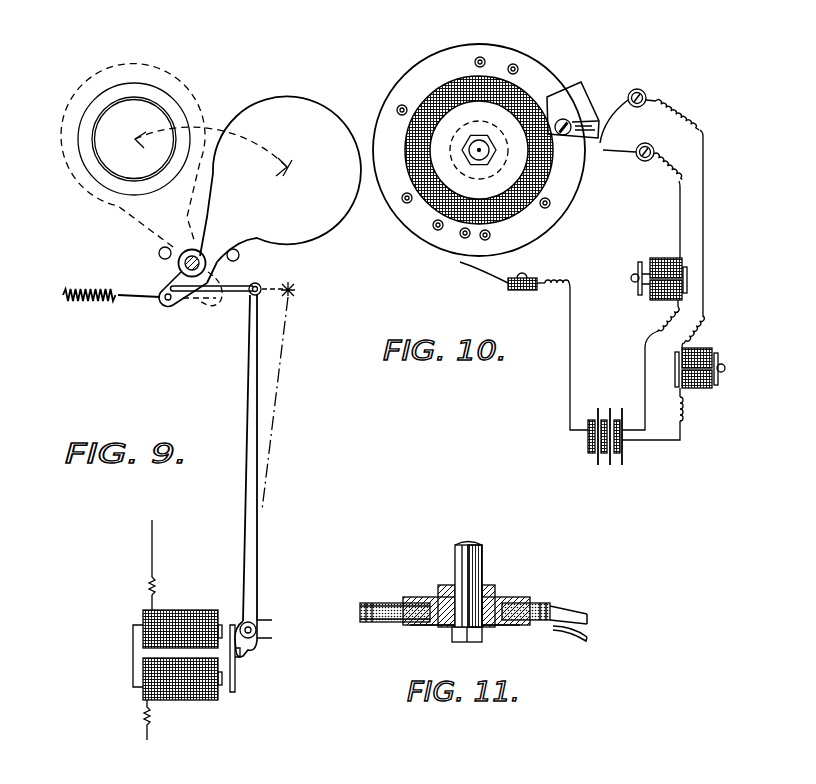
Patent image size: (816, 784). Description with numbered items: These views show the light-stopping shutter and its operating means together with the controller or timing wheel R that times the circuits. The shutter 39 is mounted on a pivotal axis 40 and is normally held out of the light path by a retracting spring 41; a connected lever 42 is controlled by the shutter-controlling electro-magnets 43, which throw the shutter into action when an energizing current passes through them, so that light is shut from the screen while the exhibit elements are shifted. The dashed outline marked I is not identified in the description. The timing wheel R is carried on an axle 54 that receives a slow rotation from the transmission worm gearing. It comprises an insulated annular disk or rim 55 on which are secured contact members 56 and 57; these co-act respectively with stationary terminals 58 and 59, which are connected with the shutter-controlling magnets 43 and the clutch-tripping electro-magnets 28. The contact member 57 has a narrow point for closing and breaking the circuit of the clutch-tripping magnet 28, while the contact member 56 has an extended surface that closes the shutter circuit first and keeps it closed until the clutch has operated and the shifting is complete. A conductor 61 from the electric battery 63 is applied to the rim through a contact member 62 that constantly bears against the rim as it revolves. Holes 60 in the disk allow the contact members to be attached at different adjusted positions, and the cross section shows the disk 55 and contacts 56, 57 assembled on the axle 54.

In FIG. 9, the cam in initial position (dashed) I is at (147, 95).
In FIG. 9, the light-stopping shutter 39 is at (285, 107).
In FIG. 9, the pivotal axis 40 is at (178, 265).
In FIG. 9, the retracting spring 41 is at (98, 299).
In FIG. 9, the connected lever 42 is at (248, 478).
In FIG. 9, the shutter-controlling electro-magnets 43 is at (187, 658).
In FIG. 10, the shutter-controlling electro-magnets 43 is at (697, 377).
In FIG. 10, the timing wheel R is at (479, 133).
In FIG. 11, the timing wheel R is at (433, 628).
In FIG. 10, the insulated annular disk 55 is at (428, 73).
In FIG. 11, the insulated annular disk 55 is at (370, 605).
In FIG. 10, the contact member 56 is at (568, 98).
In FIG. 11, the contact member 56 is at (584, 621).
In FIG. 10, the contact member 57 is at (584, 120).
In FIG. 11, the contact member 57 is at (588, 639).
In FIG. 10, the stationary terminal 58 is at (620, 113).
In FIG. 10, the stationary terminal 59 is at (623, 158).
In FIG. 10, the holes 60 is at (434, 229).
In FIG. 10, the conductor 61 is at (567, 373).
In FIG. 10, the contact member 62 is at (495, 270).
In FIG. 10, the electric battery 63 is at (606, 454).
In FIG. 10, the clutch-tripping electro-magnets 28 is at (658, 259).
In FIG. 11, the axle of the timing wheel 54 is at (472, 563).